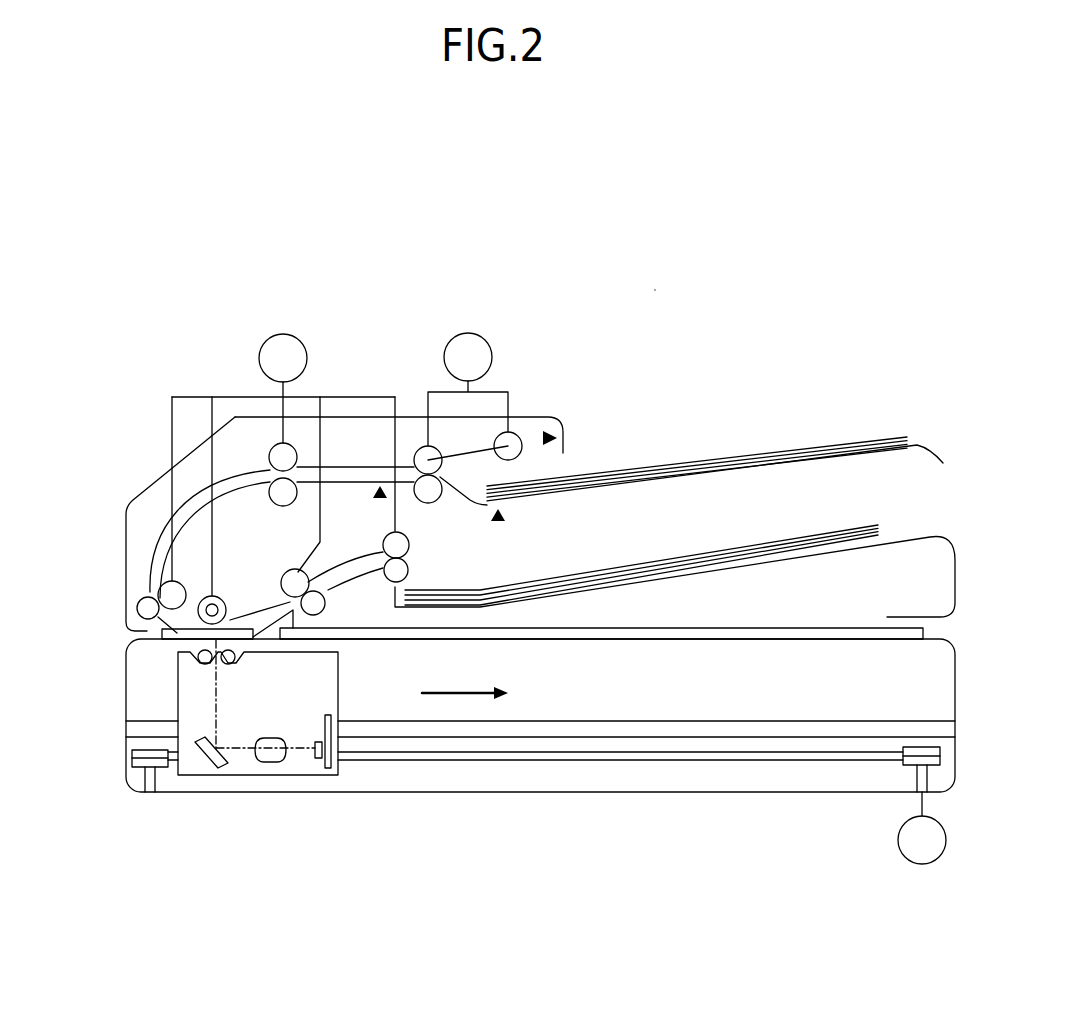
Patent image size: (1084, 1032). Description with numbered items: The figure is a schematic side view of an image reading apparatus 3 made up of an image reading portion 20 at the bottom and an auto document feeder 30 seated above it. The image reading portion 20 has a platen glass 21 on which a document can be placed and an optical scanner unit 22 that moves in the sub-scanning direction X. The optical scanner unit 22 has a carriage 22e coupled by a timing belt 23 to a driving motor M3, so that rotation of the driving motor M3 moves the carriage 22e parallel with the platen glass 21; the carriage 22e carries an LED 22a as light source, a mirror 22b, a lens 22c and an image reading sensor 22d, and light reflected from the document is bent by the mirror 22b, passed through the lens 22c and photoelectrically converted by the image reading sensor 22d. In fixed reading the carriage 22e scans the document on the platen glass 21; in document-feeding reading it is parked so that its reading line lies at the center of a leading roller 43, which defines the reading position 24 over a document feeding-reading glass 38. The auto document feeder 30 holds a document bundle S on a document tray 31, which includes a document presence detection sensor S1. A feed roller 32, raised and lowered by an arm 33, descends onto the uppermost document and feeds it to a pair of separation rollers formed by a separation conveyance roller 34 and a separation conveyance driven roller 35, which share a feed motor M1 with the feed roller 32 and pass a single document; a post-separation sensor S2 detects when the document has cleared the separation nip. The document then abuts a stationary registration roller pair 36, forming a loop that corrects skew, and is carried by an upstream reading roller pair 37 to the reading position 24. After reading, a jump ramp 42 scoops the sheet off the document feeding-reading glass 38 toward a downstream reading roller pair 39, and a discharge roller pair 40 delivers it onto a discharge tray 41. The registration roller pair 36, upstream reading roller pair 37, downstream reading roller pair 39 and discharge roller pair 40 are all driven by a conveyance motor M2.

The image reading apparatus 3 is at (657, 292).
The image reading portion 20 is at (118, 728).
The platen glass 21 is at (694, 630).
The optical scanner unit 22 is at (165, 780).
The LED 22a is at (207, 665).
The mirror 22b is at (203, 758).
The lens 22c is at (271, 763).
The image reading sensor 22d is at (317, 759).
The carriage 22e is at (232, 776).
The timing belt 23 is at (816, 757).
The reading position 24 is at (212, 633).
The auto document feeder 30 is at (148, 472).
The document tray 31 is at (792, 458).
The feed roller 32 is at (515, 442).
The arm 33 is at (478, 450).
The separation conveyance roller 34 is at (420, 450).
The separation conveyance driven roller 35 is at (428, 503).
The registration roller pair 36 is at (268, 446).
The upstream reading roller pair 37 is at (128, 601).
The document feeding-reading glass 38 is at (177, 637).
The downstream reading roller pair 39 is at (336, 608).
The discharge roller pair 40 is at (375, 533).
The discharge tray 41 is at (904, 535).
The jump ramp 42 is at (296, 620).
The leading roller 43 is at (222, 602).
The document bundle S is at (690, 458).
The document presence detection sensor S1 is at (508, 522).
The post-separation sensor S2 is at (372, 497).
The sub-scanning direction X is at (465, 682).
The feed motor M1 is at (468, 389).
The conveyance motor M2 is at (283, 388).
The driving motor M3 is at (922, 828).